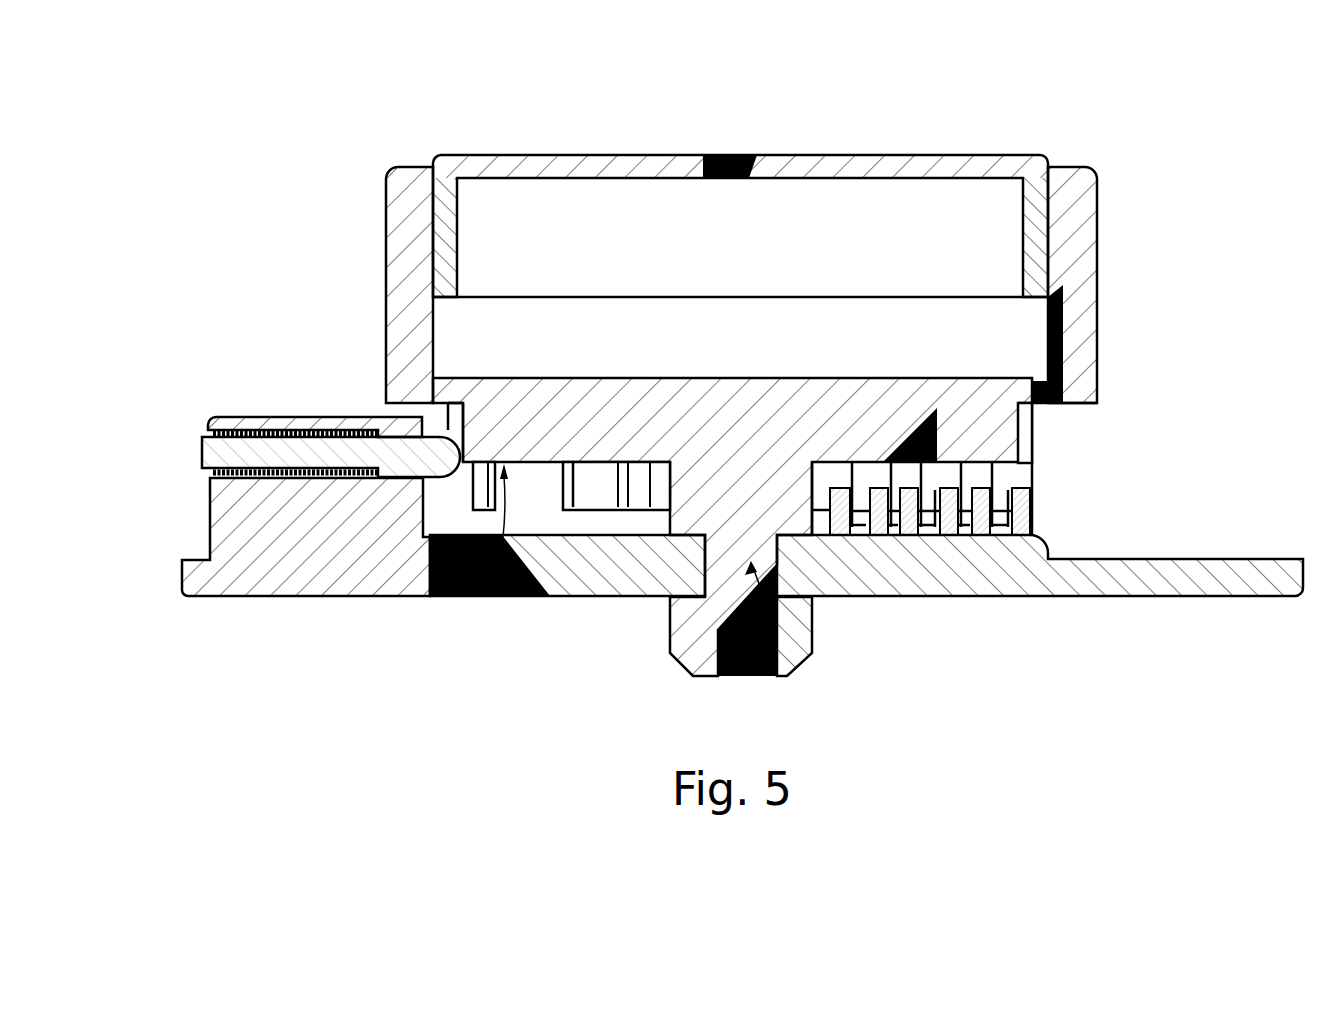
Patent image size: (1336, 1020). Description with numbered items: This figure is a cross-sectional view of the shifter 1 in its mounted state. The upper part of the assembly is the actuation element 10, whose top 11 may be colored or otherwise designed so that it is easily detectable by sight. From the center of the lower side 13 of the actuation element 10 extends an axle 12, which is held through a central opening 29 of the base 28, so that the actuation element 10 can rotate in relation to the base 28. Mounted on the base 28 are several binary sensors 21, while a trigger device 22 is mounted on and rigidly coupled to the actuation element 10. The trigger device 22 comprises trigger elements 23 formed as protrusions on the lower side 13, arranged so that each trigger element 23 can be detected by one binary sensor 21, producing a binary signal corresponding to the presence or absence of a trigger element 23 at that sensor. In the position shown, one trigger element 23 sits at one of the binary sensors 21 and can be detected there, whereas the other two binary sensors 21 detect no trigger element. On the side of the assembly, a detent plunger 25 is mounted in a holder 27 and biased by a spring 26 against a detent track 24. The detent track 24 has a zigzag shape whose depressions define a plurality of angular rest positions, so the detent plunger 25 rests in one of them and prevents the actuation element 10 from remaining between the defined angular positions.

The shifter 1 is at (405, 128).
The actuation element 10 is at (1073, 218).
The top 11 is at (921, 200).
The axle 12 is at (722, 604).
The lower side 13 is at (469, 597).
The binary sensors 21 is at (1020, 510).
The trigger device 22 is at (552, 497).
The trigger elements 23 is at (1005, 467).
The detent track 24 is at (458, 416).
The detent plunger 25 is at (393, 452).
The spring 26 is at (212, 468).
The holder 27 is at (273, 424).
The base 28 is at (1220, 578).
The central opening 29 is at (747, 672).